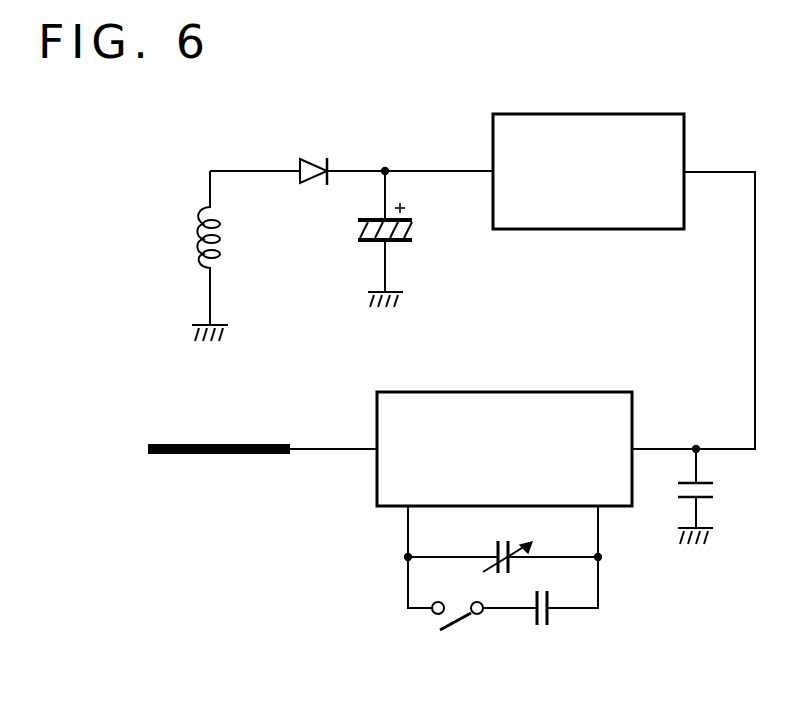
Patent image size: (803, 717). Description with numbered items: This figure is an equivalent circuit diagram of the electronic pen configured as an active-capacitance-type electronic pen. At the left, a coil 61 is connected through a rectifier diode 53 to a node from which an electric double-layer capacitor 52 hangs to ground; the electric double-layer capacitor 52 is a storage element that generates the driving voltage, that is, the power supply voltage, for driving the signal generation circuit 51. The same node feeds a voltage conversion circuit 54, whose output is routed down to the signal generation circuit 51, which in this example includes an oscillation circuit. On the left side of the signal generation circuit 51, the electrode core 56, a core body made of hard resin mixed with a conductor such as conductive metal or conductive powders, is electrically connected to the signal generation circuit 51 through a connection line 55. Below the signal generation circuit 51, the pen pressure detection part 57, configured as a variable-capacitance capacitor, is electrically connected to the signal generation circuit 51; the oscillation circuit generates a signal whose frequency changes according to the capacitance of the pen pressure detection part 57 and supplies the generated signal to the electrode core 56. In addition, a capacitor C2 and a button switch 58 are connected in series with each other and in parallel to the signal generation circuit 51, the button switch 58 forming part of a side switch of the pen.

The signal generation circuit 51 is at (446, 392).
The electric double-layer capacitor 52 is at (358, 231).
The rectifier diode 53 is at (316, 165).
The voltage conversion circuit 54 is at (608, 230).
The connection line 55 is at (320, 452).
The electrode core 56 is at (203, 454).
The pen pressure detection part 57 is at (490, 547).
The button switch 58 is at (460, 630).
The coil 61 is at (196, 217).
The capacitor C2 is at (542, 627).